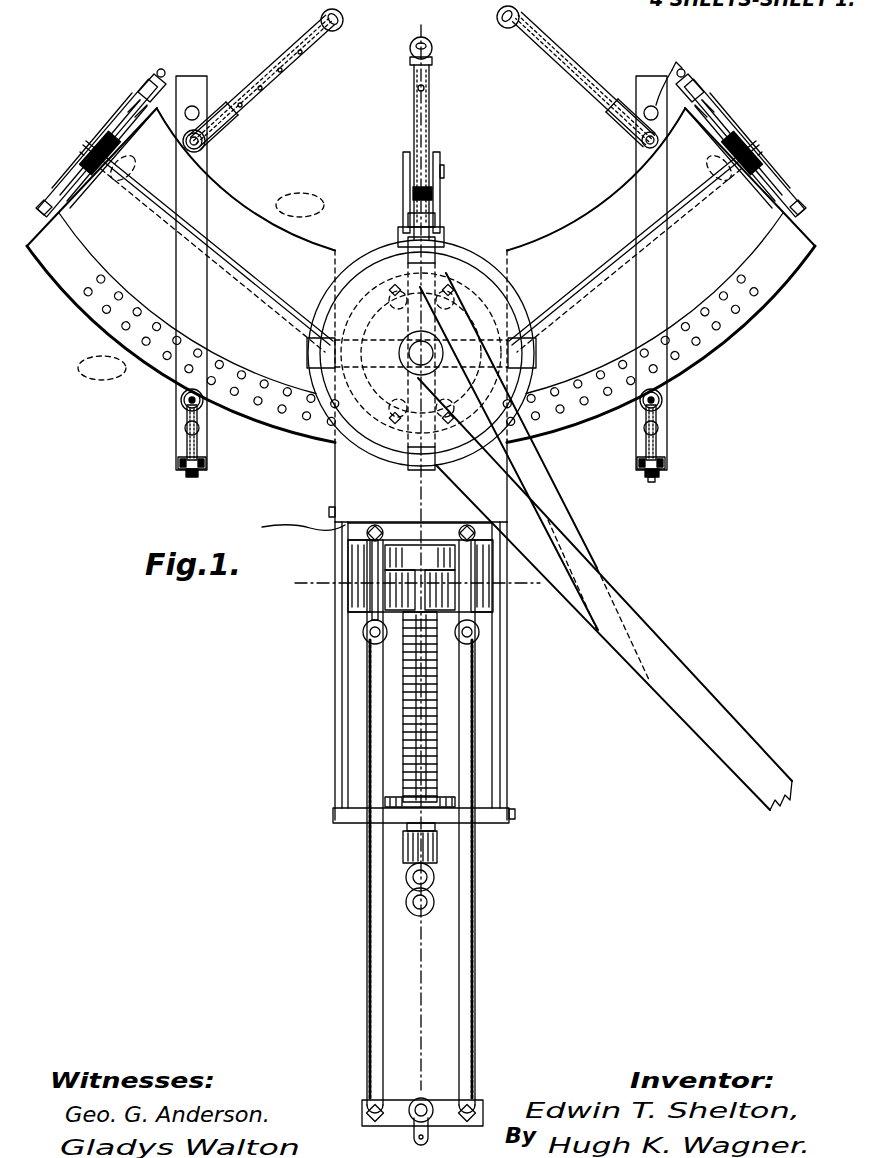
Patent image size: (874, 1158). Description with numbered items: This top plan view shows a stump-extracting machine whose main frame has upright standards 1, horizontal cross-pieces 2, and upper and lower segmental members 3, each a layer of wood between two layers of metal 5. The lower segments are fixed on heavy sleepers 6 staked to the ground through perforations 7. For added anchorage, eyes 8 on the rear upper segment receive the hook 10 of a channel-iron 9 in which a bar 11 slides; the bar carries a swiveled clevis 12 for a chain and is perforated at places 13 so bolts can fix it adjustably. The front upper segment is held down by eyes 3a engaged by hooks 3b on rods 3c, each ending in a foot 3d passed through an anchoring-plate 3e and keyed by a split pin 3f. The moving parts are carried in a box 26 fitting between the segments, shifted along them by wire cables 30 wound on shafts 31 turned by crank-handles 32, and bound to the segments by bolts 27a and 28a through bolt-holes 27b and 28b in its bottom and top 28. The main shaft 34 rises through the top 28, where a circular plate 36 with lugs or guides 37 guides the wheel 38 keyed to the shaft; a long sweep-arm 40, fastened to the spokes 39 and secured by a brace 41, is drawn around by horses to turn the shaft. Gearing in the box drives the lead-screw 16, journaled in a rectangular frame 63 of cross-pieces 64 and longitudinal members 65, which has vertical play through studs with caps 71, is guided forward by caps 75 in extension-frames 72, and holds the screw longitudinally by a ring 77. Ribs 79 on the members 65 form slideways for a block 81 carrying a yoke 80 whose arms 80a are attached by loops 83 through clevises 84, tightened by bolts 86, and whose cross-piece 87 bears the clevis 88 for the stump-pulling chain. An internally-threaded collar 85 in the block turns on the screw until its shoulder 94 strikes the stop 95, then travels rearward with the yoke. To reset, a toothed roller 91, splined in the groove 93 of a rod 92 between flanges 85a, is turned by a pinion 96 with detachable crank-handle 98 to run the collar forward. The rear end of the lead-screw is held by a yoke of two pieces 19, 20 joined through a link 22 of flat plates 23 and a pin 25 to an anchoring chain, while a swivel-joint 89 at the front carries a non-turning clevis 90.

The upright standards 1 is at (421, 168).
The horizontal cross-pieces 2 is at (424, 42).
The segmental members 3 is at (214, 203).
The eyes 3a is at (183, 401).
The hooks 3b is at (184, 408).
The rods 3c is at (198, 436).
The foot 3d is at (660, 474).
The anchoring-plate 3e is at (636, 462).
The split pin 3f is at (648, 478).
The layers of metal 5 is at (409, 582).
The sleepers 6 is at (421, 273).
The perforations 7 is at (185, 432).
The eyes 8 is at (203, 143).
The channel-iron 9 is at (215, 122).
The hook 10 is at (202, 147).
The bar 11 is at (562, 78).
The swiveled clevis 12 is at (344, 20).
The perforations 13 is at (548, 48).
The lead-screw 16 is at (407, 707).
The yoke piece 19 is at (406, 222).
The yoke piece 20 is at (437, 223).
The link 22 is at (434, 192).
The flat plates 23 is at (404, 160).
The pin 25 is at (445, 170).
The box 26 is at (336, 458).
The bolts 27a is at (395, 275).
The bolt-holes 27b is at (215, 203).
The top 28 is at (421, 386).
The bolts 28a is at (440, 298).
The bolt-holes 28b is at (212, 238).
The wire cables 30 is at (128, 192).
The shafts 31 is at (78, 160).
The crank-handles 32 is at (150, 80).
The main shaft 34 is at (428, 360).
The circular plate 36 is at (520, 340).
The lugs or guides 37 is at (526, 360).
The wheel 38 is at (505, 312).
The spokes 39 is at (495, 350).
The sweep-arm 40 is at (605, 594).
The brace 41 is at (535, 477).
The rectangular frame 63 is at (345, 748).
The cross-pieces 64 is at (487, 823).
The longitudinal members 65 is at (496, 752).
The caps 71 is at (328, 512).
The extension-frames 72 is at (503, 712).
The caps 75 is at (515, 811).
The ring 77 is at (407, 826).
The ribs 79 is at (348, 712).
The yoke 80 is at (362, 1113).
The longitudinal arms 80a is at (478, 948).
The block 81 is at (420, 560).
The loops 83 is at (458, 596).
The clevises 84 is at (480, 633).
The internally-threaded collar 85 is at (388, 596).
The flanges 85a is at (375, 612).
The bolts 86 is at (294, 523).
The cross-piece 87 is at (400, 1105).
The clevis 88 is at (414, 1138).
The swivel-joint 89 is at (403, 845).
The clevis 90 is at (406, 884).
The externally-toothed roller 91 is at (435, 530).
The rod 92 is at (440, 677).
The longitudinal groove 93 is at (412, 525).
The shoulder 94 is at (350, 553).
The stop 95 is at (470, 560).
The pinion 96 is at (445, 805).
The detachable crank-handle 98 is at (385, 800).